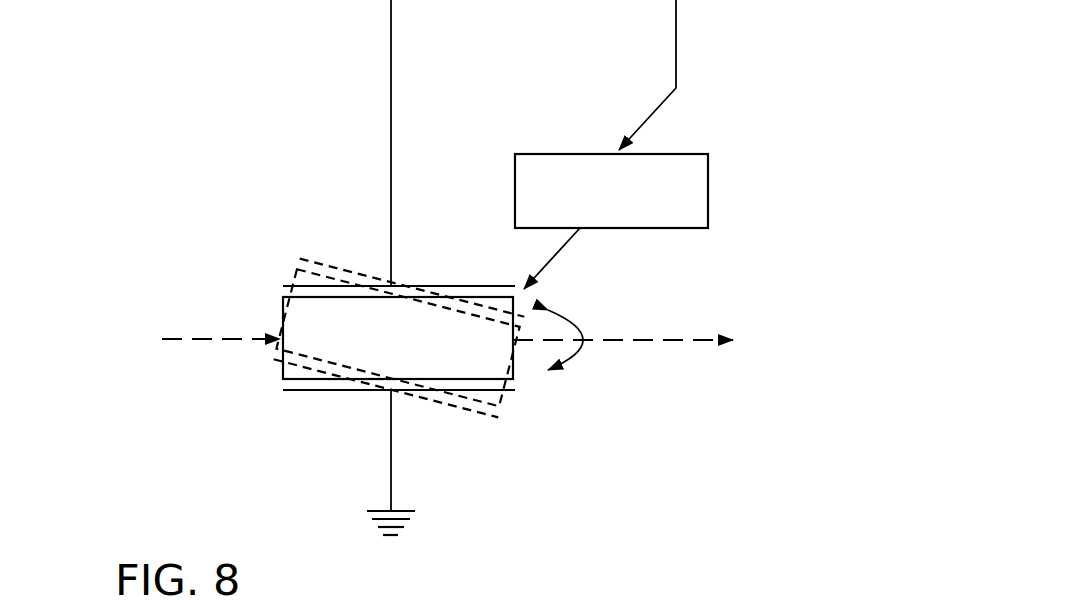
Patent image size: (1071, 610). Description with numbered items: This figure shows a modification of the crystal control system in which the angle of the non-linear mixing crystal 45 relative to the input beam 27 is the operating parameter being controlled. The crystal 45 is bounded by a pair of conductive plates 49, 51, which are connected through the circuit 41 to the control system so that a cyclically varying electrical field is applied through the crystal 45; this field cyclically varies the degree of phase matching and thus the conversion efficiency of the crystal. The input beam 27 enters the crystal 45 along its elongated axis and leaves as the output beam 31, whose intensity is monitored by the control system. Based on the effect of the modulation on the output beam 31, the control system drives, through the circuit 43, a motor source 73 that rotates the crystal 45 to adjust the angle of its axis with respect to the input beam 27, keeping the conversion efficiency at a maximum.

The input beam 27 is at (211, 338).
The output beam 31 is at (650, 340).
The circuit 41 is at (390, 102).
The circuit 43 is at (676, 80).
The non-linear mixing crystal 45 is at (465, 357).
The conductive plate 49 is at (434, 287).
The conductive plate 51 is at (320, 393).
The motor source 73 is at (708, 200).